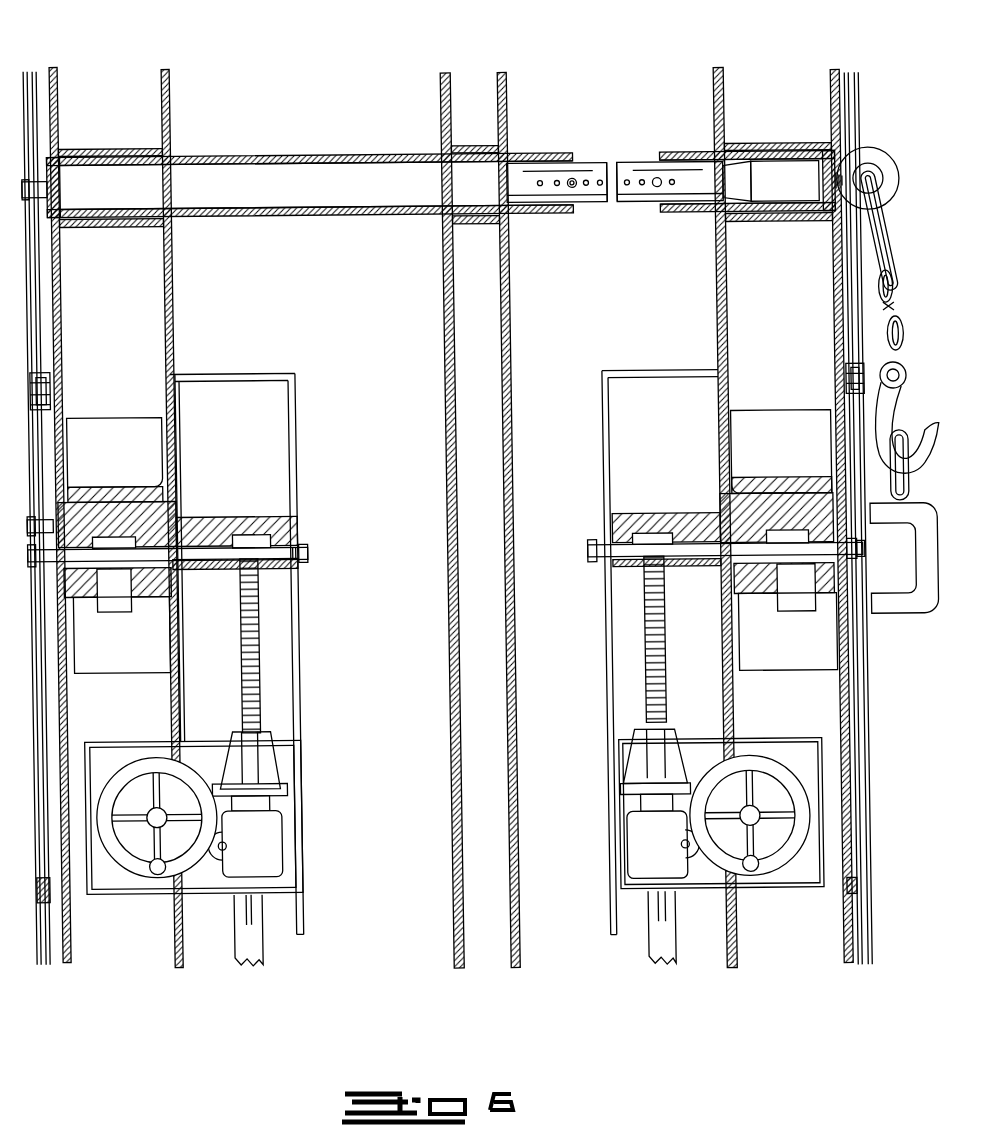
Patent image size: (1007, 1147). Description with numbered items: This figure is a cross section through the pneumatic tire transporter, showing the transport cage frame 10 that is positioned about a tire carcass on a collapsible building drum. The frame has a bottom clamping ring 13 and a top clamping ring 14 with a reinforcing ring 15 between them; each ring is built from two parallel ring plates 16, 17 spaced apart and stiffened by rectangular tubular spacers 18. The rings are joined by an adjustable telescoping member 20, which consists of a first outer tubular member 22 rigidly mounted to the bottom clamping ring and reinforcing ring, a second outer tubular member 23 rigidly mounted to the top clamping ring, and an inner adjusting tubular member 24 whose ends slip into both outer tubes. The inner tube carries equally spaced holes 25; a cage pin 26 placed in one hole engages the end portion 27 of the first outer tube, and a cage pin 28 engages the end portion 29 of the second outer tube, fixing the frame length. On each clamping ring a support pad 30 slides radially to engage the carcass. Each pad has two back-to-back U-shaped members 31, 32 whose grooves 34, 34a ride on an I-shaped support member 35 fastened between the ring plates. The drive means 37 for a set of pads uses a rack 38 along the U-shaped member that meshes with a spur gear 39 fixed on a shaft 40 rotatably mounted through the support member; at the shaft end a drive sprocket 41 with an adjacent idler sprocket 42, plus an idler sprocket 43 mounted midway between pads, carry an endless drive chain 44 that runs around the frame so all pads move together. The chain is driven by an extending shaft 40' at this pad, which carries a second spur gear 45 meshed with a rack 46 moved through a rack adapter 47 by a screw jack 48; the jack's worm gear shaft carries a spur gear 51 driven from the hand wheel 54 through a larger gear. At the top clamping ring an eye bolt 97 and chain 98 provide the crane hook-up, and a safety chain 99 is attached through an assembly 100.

The transport cage frame 10 is at (385, 80).
The bottom clamping ring 13 is at (180, 297).
The top clamping ring 14 is at (845, 73).
The reinforcing ring 15 is at (513, 350).
The ring plate 16 is at (50, 946).
The ring plate 17 is at (170, 962).
The rectangular tubular spacer 18 is at (93, 149).
The adjustable telescoping member 20 is at (606, 153).
The first outer tubular member 22 is at (316, 160).
The second outer tubular member 23 is at (768, 157).
The inner adjusting tubular member 24 is at (619, 206).
The holes 25 is at (583, 195).
The cage pin 26 is at (569, 183).
The end portion 27 is at (573, 165).
The cage pin 28 is at (654, 184).
The end portion 29 is at (638, 231).
The support pad 30 is at (121, 410).
The U-shaped member 31 is at (141, 601).
The U-shaped member 32 is at (114, 488).
The groove 34 is at (61, 591).
The groove 34a is at (732, 502).
The I-shaped support member 35 is at (167, 522).
The drive means 37 is at (92, 584).
The rack 38 is at (108, 614).
The spur gear 39 is at (171, 562).
The shaft 40 is at (457, 654).
The extending shaft 40' is at (446, 564).
The drive sprocket 41 is at (34, 405).
The idler sprocket 42 is at (44, 380).
The idler sprocket 43 is at (34, 898).
The endless drive chain 44 is at (33, 961).
The second spur gear 45 is at (242, 540).
The rack 46 is at (227, 672).
The rack adapter 47 is at (268, 768).
The screw jack 48 is at (262, 848).
The spur gear 51 is at (206, 862).
The hand wheel 54 is at (154, 875).
The eye bolt 97 is at (880, 166).
The chain 98 is at (888, 313).
The safety chain 99 is at (897, 368).
The assembly 100 is at (893, 621).